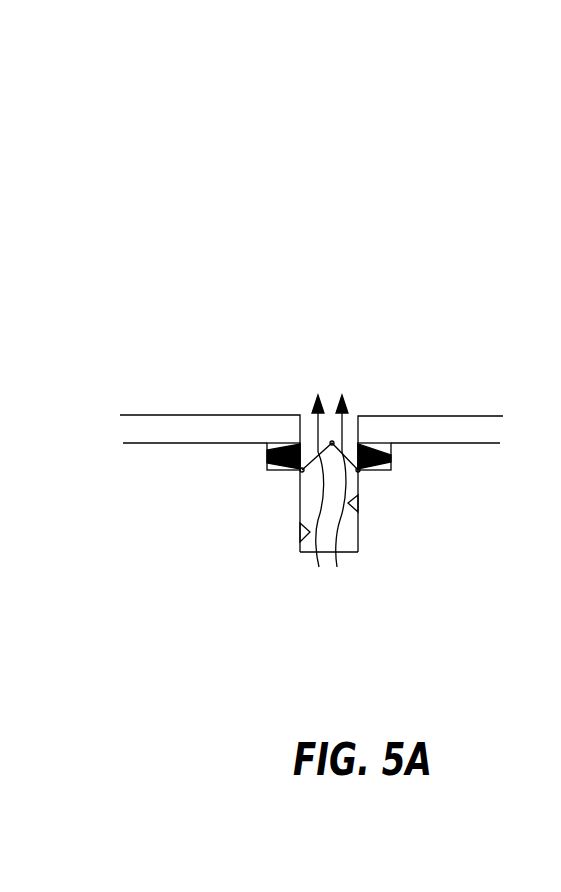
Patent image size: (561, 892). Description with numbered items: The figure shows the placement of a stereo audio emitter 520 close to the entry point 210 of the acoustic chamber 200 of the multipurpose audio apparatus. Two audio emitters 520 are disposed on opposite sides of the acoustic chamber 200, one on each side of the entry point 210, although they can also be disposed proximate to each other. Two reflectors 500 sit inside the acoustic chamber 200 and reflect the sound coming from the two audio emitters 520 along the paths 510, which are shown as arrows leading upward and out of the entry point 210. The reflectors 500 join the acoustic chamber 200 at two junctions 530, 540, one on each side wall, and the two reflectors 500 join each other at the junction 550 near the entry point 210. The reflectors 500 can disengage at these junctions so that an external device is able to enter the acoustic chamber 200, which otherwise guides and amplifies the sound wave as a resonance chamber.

The acoustic chamber 200 is at (310, 428).
The entry point 210 is at (360, 420).
The reflectors 500 is at (329, 522).
The paths 510 is at (347, 394).
The stereo audio emitter 520 is at (301, 471).
The junction 530 is at (358, 471).
The junction 540 is at (300, 485).
The junction 550 is at (268, 454).